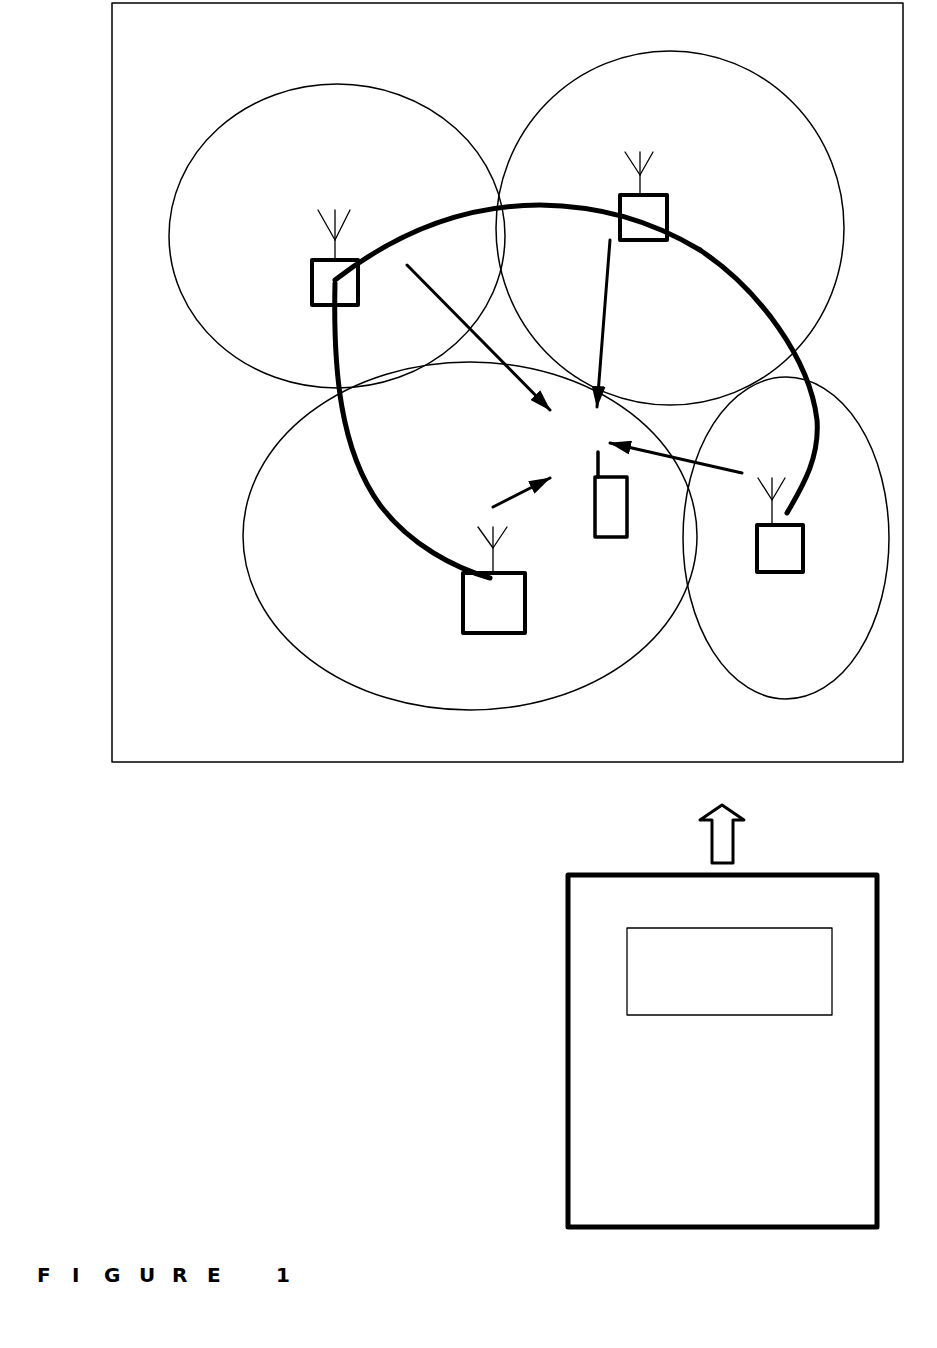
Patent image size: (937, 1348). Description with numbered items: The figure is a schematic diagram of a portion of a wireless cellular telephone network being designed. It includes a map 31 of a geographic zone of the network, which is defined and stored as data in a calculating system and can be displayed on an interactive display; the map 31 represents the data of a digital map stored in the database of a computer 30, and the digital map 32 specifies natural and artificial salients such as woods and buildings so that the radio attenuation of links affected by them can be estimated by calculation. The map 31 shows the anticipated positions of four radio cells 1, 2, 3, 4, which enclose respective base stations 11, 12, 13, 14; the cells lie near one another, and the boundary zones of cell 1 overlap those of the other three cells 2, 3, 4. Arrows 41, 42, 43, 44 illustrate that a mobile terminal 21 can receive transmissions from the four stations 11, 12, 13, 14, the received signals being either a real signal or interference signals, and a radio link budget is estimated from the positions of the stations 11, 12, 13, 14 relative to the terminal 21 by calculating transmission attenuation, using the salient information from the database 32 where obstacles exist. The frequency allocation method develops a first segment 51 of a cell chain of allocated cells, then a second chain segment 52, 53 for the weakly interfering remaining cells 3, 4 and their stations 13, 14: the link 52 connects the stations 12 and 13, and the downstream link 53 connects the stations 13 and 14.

The radio cell 1 is at (337, 661).
The radio cell 2 is at (322, 166).
The radio cell 3 is at (755, 168).
The radio cell 4 is at (784, 702).
The base station 11 is at (463, 603).
The base station 12 is at (312, 294).
The base station 13 is at (667, 201).
The base station 14 is at (785, 572).
The mobile terminal 21 is at (610, 537).
The computer 30 is at (568, 1227).
The map 31 is at (240, 762).
The digital map 32 is at (626, 945).
The arrow 41 is at (507, 489).
The arrow 42 is at (417, 278).
The arrow 43 is at (610, 278).
The arrow 44 is at (715, 458).
The first segment of cell chain 51 is at (353, 465).
The link 52 is at (552, 195).
The link 53 is at (772, 322).